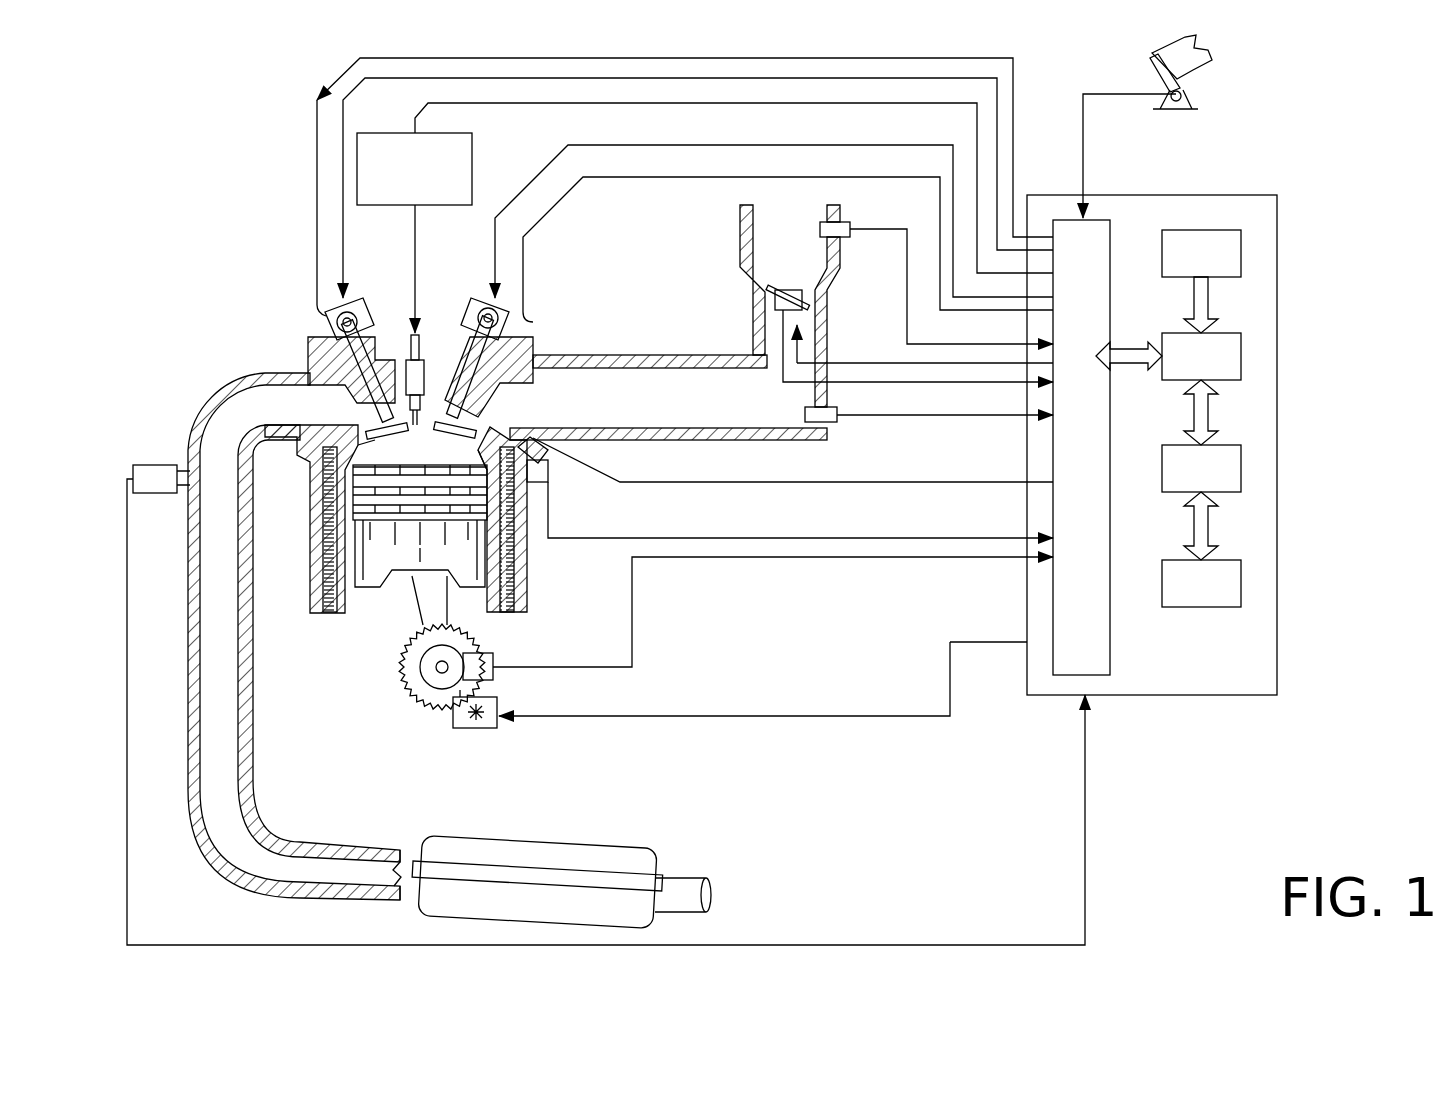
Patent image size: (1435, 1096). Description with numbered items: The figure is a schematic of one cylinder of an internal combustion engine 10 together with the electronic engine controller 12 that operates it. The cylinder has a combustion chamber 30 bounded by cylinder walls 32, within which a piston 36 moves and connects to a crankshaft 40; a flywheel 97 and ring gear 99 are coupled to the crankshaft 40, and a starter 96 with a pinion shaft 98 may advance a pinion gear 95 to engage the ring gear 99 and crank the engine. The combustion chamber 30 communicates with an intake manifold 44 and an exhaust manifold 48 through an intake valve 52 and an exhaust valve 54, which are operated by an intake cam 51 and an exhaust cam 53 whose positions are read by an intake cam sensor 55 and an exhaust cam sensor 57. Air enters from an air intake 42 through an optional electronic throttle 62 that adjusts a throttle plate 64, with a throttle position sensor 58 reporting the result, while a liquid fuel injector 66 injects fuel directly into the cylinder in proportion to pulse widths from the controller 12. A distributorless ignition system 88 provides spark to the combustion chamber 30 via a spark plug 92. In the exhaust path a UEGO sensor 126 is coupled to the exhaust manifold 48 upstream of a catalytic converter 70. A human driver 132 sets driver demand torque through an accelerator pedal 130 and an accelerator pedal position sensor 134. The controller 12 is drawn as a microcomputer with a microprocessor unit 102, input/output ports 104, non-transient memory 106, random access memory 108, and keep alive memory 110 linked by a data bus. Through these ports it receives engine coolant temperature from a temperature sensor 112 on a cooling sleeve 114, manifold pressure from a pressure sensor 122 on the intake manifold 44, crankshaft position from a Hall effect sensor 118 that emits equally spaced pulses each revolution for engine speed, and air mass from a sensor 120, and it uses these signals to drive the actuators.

The internal combustion engine 10 is at (237, 287).
The electronic engine controller 12 is at (1277, 200).
The combustion chamber 30 is at (335, 553).
The cylinder walls 32 is at (345, 622).
The piston 36 is at (400, 555).
The crankshaft 40 is at (432, 690).
The air intake 42 is at (805, 260).
The intake manifold 44 is at (733, 411).
The exhaust manifold 48 is at (291, 419).
The intake cam 51 is at (485, 300).
The intake valve 52 is at (482, 416).
The exhaust cam 53 is at (352, 305).
The exhaust valve 54 is at (312, 383).
The intake cam sensor 55 is at (518, 318).
The exhaust cam sensor 57 is at (330, 318).
The throttle position sensor 58 is at (770, 312).
The electronic throttle 62 is at (812, 292).
The throttle plate 64 is at (770, 290).
The liquid fuel injector 66 is at (545, 452).
The catalytic converter 70 is at (437, 842).
The distributorless ignition system 88 is at (376, 133).
The spark plug 92 is at (410, 345).
The pinion gear 95 is at (480, 728).
The starter 96 is at (490, 730).
The flywheel 97 is at (420, 660).
The pinion shaft 98 is at (465, 725).
The ring gear 99 is at (440, 708).
The microprocessor unit 102 is at (1243, 358).
The input/output ports 104 is at (1115, 235).
The non-transient memory 106 is at (1243, 252).
The random access memory 108 is at (1243, 468).
The keep alive memory 110 is at (1243, 582).
The temperature sensor 112 is at (550, 485).
The cooling sleeve 114 is at (527, 560).
The Hall effect sensor 118 is at (495, 655).
The air mass sensor 120 is at (835, 240).
The pressure sensor 122 is at (832, 424).
The UEGO sensor 126 is at (133, 470).
The accelerator pedal 130 is at (1152, 72).
The human driver 132 is at (1205, 55).
The accelerator pedal position sensor 134 is at (1192, 96).